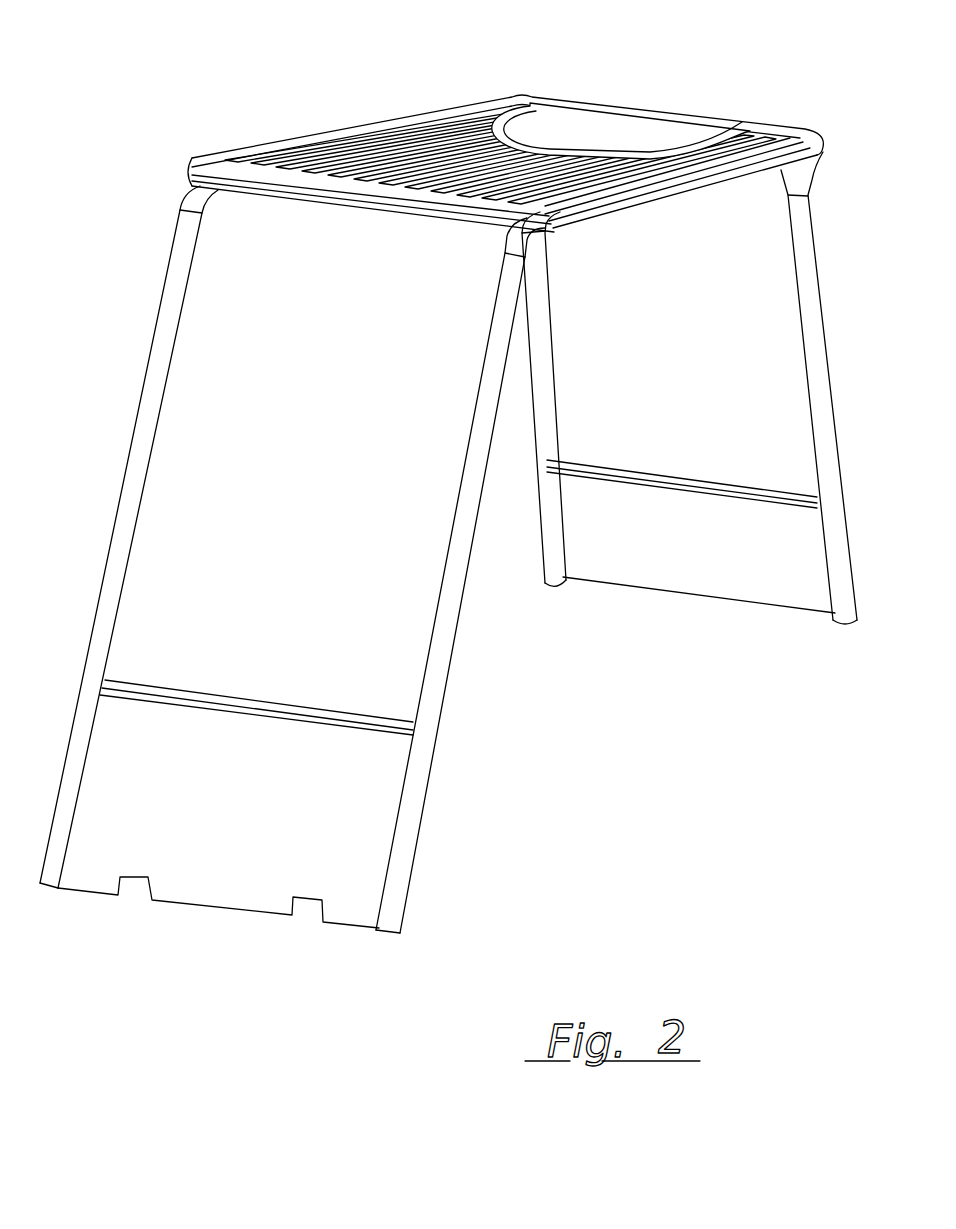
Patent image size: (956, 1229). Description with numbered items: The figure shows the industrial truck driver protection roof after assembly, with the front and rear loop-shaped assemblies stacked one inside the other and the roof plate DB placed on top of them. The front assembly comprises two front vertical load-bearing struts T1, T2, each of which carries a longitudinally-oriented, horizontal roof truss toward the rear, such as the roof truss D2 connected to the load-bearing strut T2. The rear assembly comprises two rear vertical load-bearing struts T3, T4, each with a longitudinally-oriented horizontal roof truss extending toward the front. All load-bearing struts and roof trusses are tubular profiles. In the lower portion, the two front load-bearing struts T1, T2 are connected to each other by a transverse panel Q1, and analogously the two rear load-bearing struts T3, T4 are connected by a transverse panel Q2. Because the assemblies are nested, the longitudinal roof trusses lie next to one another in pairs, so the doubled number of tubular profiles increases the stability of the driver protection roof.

The roof plate DB is at (484, 112).
The roof truss D2 is at (673, 188).
The load-bearing strut T1 is at (138, 460).
The load-bearing strut T2 is at (452, 590).
The load-bearing strut T3 is at (535, 315).
The load-bearing strut T4 is at (820, 357).
The transverse panel Q1 is at (237, 808).
The transverse panel Q2 is at (717, 551).